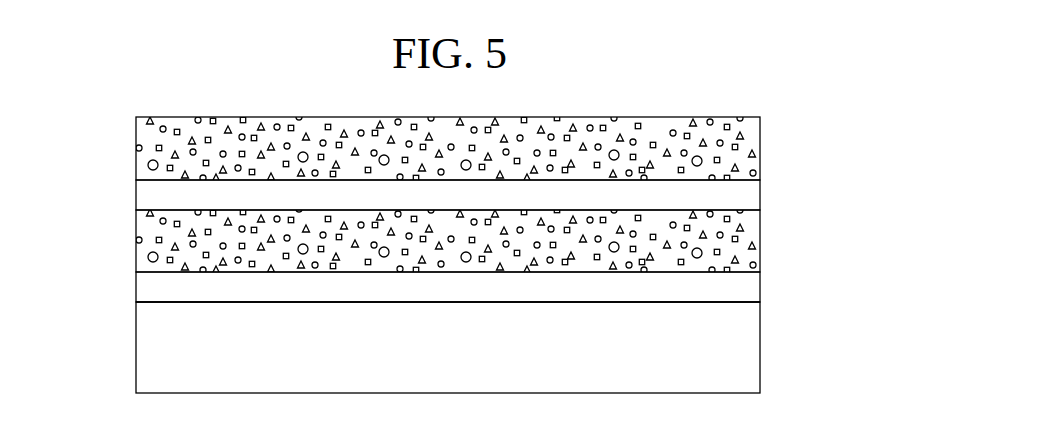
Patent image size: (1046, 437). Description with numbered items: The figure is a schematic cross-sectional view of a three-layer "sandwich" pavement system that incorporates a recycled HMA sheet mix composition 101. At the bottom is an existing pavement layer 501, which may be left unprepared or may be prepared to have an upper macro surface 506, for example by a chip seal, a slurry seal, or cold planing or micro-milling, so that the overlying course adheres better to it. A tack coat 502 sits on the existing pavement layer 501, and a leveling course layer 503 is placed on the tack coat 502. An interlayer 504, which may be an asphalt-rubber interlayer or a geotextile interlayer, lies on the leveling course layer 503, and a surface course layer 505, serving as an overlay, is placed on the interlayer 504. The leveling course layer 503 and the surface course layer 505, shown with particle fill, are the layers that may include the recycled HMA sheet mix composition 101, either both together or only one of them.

The recycled HMA sheet mix composition 101 is at (176, 155).
The existing pavement layer 501 is at (767, 350).
The tack coat 502 is at (722, 287).
The leveling course layer 503 is at (765, 248).
The interlayer 504 is at (722, 195).
The surface course layer 505 is at (767, 125).
The upper macro surface 506 is at (181, 301).